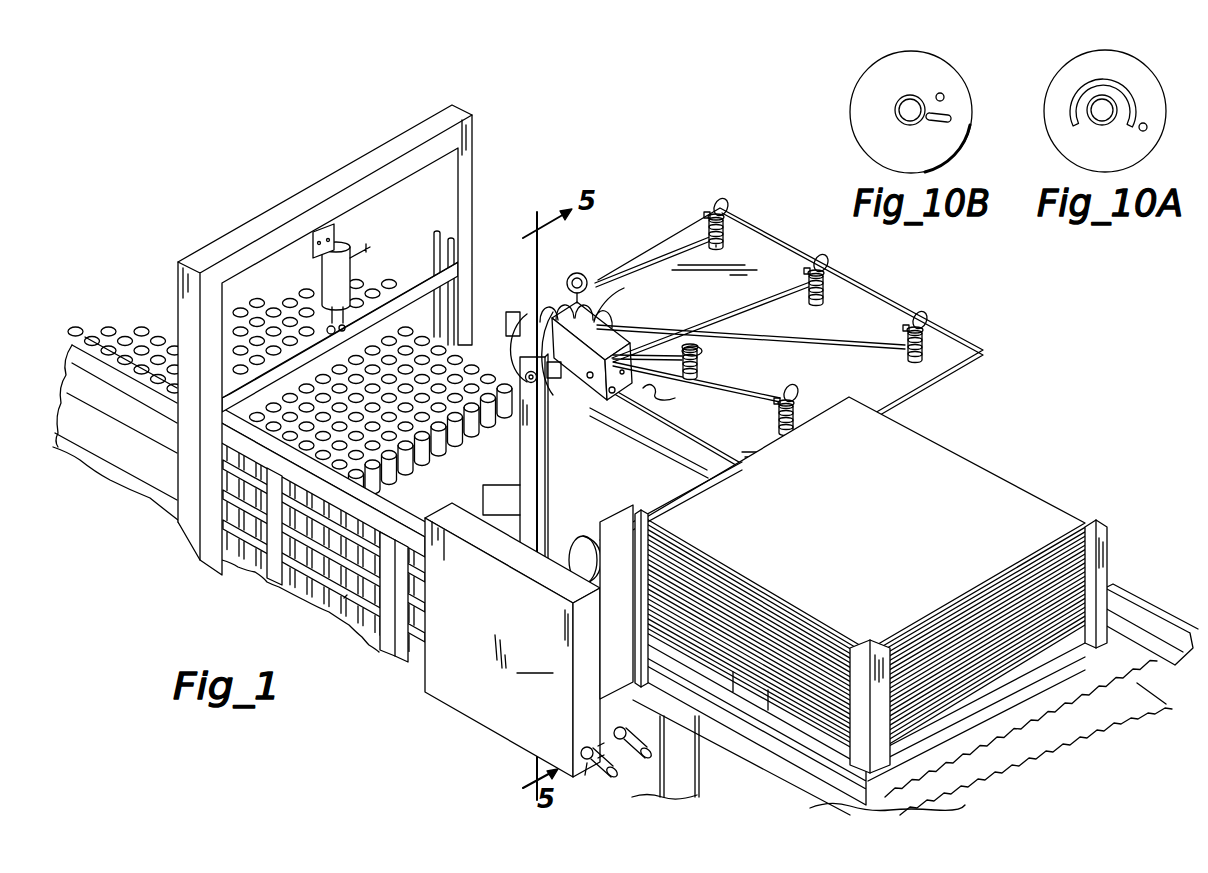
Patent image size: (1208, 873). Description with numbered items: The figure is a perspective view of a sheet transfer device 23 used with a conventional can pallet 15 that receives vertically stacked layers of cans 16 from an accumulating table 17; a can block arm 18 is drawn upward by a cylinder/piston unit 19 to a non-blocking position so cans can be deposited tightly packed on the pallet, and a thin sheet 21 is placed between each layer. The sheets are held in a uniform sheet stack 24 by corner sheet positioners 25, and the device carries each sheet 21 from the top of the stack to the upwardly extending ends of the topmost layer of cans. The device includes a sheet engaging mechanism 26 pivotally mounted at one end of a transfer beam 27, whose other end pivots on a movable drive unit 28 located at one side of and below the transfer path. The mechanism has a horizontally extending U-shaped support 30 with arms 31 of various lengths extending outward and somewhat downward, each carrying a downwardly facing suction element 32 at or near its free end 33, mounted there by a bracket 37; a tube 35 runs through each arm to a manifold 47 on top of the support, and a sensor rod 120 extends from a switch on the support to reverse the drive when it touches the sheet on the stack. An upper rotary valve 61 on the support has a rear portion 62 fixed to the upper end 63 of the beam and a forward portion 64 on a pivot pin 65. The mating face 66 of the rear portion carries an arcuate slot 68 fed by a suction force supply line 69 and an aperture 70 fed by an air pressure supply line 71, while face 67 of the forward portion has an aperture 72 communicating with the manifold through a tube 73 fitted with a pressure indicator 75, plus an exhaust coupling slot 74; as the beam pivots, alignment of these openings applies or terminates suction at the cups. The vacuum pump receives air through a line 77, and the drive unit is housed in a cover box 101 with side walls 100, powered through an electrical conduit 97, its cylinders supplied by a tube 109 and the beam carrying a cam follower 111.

In FIG. 1, the can pallet 15 is at (347, 597).
In FIG. 1, the cans 16 is at (415, 470).
In FIG. 1, the accumulating table 17 is at (158, 343).
In FIG. 1, the can block arm 18 is at (413, 307).
In FIG. 1, the cylinder/piston unit 19 is at (330, 272).
In FIG. 1, the sheet 21 is at (880, 288).
In FIG. 1, the sheet transfer device 23 is at (727, 185).
In FIG. 1, the sheet stack 24 is at (817, 690).
In FIG. 1, the corner sheet positioners 25 is at (865, 647).
In FIG. 1, the sheet engaging mechanism 26 is at (592, 388).
In FIG. 1, the transfer beam 27 is at (521, 471).
In FIG. 1, the movable drive unit 28 is at (452, 678).
In FIG. 1, the U-shaped support 30 is at (577, 382).
In FIG. 1, the arms 31 is at (622, 270).
In FIG. 1, the suction elements 32 is at (735, 222).
In FIG. 1, the free end 33 is at (718, 206).
In FIG. 1, the tube 35 is at (726, 204).
In FIG. 1, the bracket 37 is at (713, 217).
In FIG. 1, the manifold 47 is at (525, 307).
In FIG. 1, the upper rotary valve 61 is at (557, 370).
In FIG. 10A, the rear portion 62 is at (1117, 148).
In FIG. 1, the upper end 63 is at (527, 383).
In FIG. 10B, the forward portion 64 is at (852, 96).
In FIG. 1, the pivot pin 65 is at (531, 388).
In FIG. 10A, the face 66 is at (1147, 88).
In FIG. 10B, the face 67 is at (957, 92).
In FIG. 10A, the arcuate slot 68 is at (1083, 83).
In FIG. 1, the suction force supply line 69 is at (548, 482).
In FIG. 10A, the aperture 70 is at (1147, 128).
In FIG. 1, the air pressure supply line 71 is at (610, 281).
In FIG. 10B, the aperture 72 is at (939, 95).
In FIG. 1, the tube 73 is at (553, 303).
In FIG. 10B, the slot 74 is at (950, 117).
In FIG. 1, the pressure indicator 75 is at (579, 274).
In FIG. 1, the line 77 is at (587, 763).
In FIG. 1, the electrical conduit 97 is at (650, 747).
In FIG. 1, the side walls 100 is at (587, 665).
In FIG. 1, the cover box 101 is at (526, 654).
In FIG. 1, the tube 109 is at (602, 746).
In FIG. 1, the cam follower 111 is at (580, 541).
In FIG. 1, the sensor rod 120 is at (657, 391).